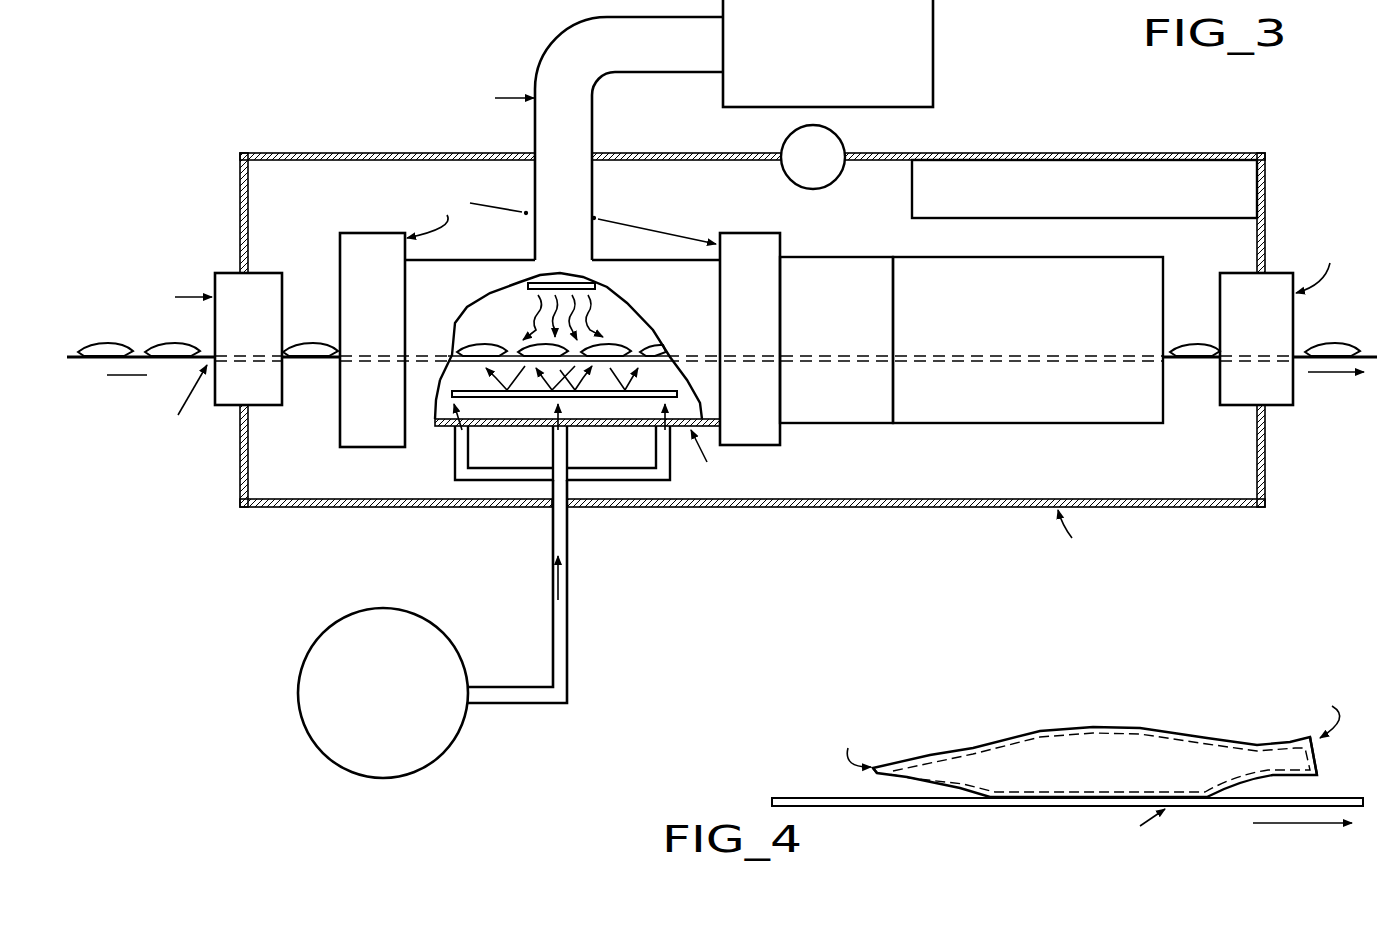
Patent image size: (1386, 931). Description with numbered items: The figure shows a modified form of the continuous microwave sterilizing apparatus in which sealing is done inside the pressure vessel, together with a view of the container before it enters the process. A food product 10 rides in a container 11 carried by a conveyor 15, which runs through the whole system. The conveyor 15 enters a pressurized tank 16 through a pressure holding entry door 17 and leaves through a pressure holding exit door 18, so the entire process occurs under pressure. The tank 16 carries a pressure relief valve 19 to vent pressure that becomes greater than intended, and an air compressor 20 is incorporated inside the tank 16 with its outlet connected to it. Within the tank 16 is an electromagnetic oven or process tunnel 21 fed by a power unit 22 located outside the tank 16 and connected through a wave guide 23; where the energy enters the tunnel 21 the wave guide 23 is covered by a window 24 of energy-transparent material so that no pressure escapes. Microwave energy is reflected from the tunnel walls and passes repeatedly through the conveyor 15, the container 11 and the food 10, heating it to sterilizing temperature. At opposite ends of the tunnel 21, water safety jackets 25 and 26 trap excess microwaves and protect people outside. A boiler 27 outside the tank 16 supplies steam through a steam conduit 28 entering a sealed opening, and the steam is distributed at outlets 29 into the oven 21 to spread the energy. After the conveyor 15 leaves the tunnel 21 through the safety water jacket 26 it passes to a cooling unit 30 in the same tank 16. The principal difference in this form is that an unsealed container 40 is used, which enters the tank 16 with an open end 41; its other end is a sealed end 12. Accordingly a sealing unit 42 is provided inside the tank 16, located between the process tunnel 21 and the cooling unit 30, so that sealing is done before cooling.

In FIG. 4, the food product 10 is at (1113, 742).
In FIG. 3, the container 11 is at (308, 343).
In FIG. 4, the sealed end 12 is at (872, 770).
In FIG. 3, the conveyor 15 is at (93, 363).
In FIG. 4, the conveyor 15 is at (940, 810).
In FIG. 3, the pressurized tank 16 is at (958, 508).
In FIG. 3, the pressure holding entry door 17 is at (255, 331).
In FIG. 3, the pressure holding exit door 18 is at (1266, 319).
In FIG. 3, the pressure relief valve 19 is at (841, 141).
In FIG. 3, the air compressor 20 is at (1212, 182).
In FIG. 3, the electromagnetic oven 21 is at (432, 431).
In FIG. 3, the power unit 22 is at (933, 27).
In FIG. 3, the wave guide 23 is at (648, 62).
In FIG. 3, the window 24 is at (595, 286).
In FIG. 3, the water safety jacket 25 is at (382, 415).
In FIG. 3, the water safety jacket 26 is at (762, 415).
In FIG. 3, the boiler 27 is at (395, 609).
In FIG. 3, the steam conduit 28 is at (568, 648).
In FIG. 3, the steam outlets 29 is at (657, 428).
In FIG. 3, the cooling unit 30 is at (1052, 401).
In FIG. 4, the unsealed container 40 is at (1036, 730).
In FIG. 4, the open end 41 is at (1319, 760).
In FIG. 3, the sealing unit 42 is at (846, 401).